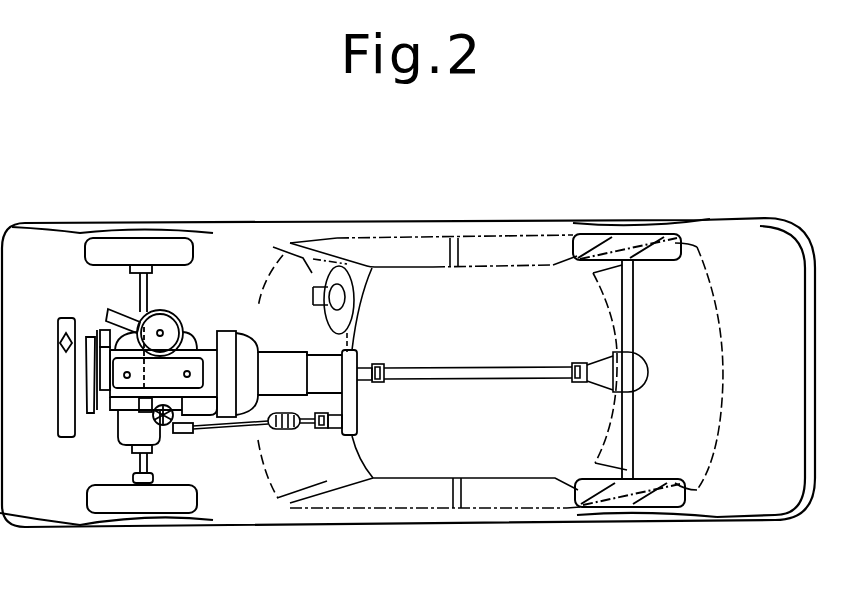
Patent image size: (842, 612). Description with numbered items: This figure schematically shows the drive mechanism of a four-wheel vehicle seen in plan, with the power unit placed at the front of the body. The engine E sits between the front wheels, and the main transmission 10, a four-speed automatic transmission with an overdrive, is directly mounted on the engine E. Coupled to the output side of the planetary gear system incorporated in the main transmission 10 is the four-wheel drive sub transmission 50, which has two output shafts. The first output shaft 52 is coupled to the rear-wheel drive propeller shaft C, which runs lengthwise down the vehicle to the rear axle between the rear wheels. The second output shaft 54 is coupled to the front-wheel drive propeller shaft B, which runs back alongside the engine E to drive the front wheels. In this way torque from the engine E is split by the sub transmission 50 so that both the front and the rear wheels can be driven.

The engine E is at (207, 337).
The main transmission 10 is at (283, 357).
The four-wheel drive sub transmission 50 is at (328, 360).
The front-wheel drive propeller shaft B is at (237, 430).
The second output shaft 54 is at (322, 433).
The first output shaft 52 is at (367, 436).
The rear-wheel drive propeller shaft C is at (486, 374).